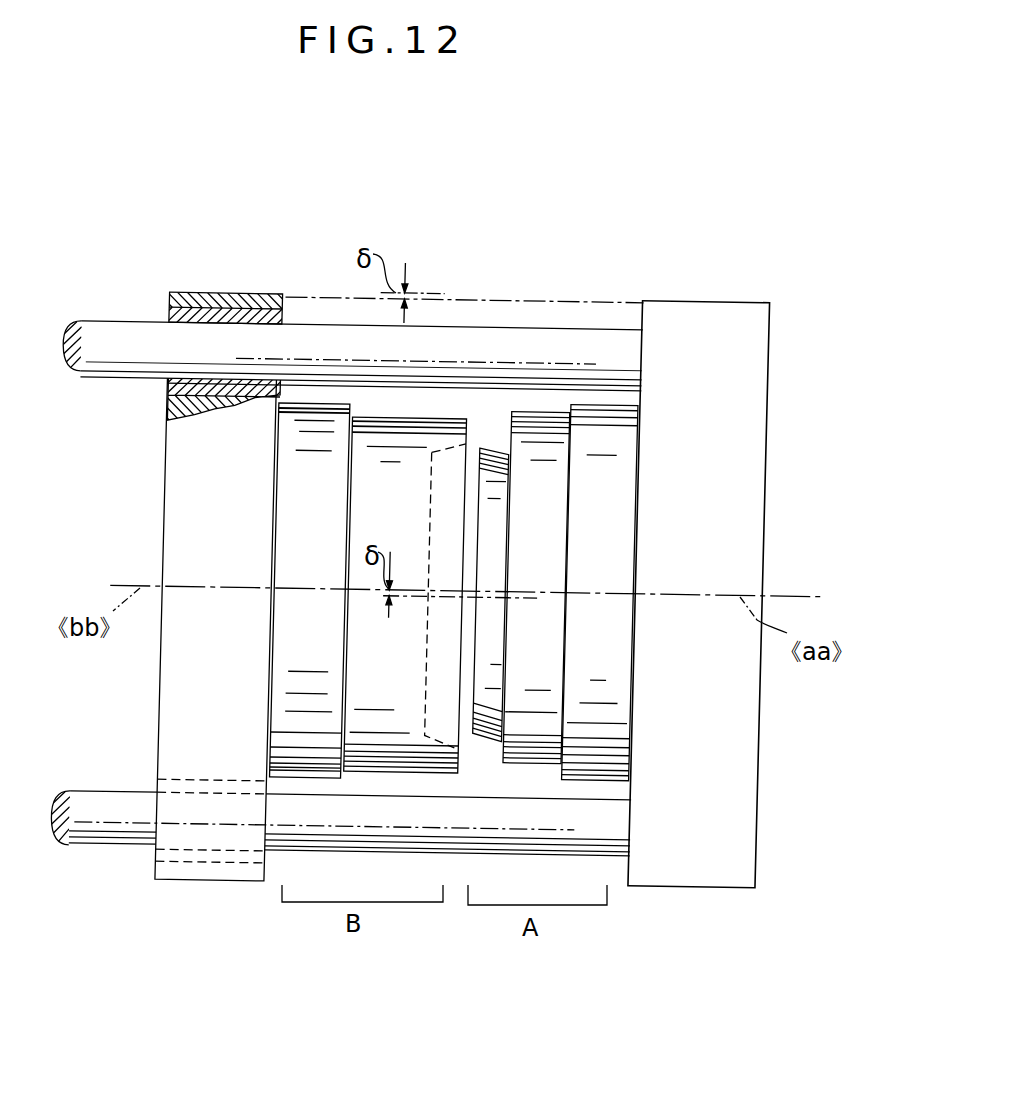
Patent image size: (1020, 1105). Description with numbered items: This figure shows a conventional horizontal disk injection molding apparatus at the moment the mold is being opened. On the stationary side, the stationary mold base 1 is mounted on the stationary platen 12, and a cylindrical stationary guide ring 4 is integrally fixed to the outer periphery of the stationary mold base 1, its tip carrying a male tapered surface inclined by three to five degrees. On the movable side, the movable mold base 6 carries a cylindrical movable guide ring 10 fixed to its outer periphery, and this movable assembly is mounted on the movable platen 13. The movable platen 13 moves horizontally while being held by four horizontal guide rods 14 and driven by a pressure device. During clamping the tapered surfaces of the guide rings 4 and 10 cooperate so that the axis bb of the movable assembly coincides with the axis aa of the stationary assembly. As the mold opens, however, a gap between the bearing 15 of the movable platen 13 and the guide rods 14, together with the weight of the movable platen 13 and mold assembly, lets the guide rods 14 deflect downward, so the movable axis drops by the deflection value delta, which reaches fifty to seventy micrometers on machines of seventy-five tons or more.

The stationary mold base 1 is at (613, 430).
The stationary guide ring 4 is at (540, 428).
The movable mold base 6 is at (300, 482).
The movable guide ring 10 is at (414, 428).
The stationary platen 12 is at (710, 313).
The movable platen 13 is at (190, 547).
The horizontal guide rods 14 is at (112, 340).
The bearing 15 is at (229, 317).